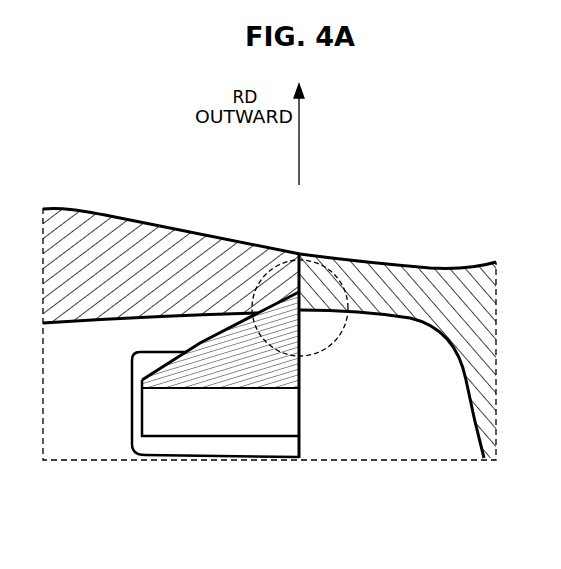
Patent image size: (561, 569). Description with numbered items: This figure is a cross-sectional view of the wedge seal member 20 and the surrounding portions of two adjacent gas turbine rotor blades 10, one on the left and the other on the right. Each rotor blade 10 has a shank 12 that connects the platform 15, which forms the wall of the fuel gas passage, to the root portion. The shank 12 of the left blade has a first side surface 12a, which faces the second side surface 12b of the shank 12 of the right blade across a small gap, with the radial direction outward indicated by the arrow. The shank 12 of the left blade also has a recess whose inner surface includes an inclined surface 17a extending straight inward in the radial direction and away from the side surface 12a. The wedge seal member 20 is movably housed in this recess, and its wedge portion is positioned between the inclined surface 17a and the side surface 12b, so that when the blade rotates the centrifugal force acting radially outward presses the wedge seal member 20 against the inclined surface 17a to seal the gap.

The rotor blade 10 is at (140, 130).
The shank 12 is at (138, 257).
The platform 15 is at (224, 240).
The first side surface 12a is at (305, 258).
The second side surface 12b is at (298, 257).
The inclined surface 17a is at (274, 300).
The wedge seal member 20 is at (285, 403).